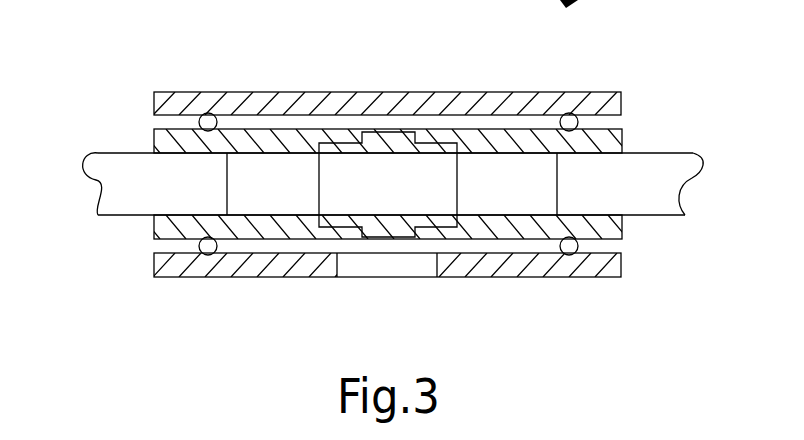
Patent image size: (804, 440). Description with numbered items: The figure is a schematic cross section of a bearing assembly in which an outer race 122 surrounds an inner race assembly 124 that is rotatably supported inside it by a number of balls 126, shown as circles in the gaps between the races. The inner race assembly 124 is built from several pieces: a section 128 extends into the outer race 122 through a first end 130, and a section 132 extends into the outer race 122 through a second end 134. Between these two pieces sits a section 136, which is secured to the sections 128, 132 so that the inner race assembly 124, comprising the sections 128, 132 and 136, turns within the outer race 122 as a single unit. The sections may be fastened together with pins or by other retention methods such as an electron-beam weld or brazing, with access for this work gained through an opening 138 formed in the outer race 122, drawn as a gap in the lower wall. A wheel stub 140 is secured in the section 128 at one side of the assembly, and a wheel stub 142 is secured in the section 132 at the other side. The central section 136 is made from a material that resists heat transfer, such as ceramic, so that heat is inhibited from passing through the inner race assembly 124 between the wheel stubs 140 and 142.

The outer race 122 is at (388, 97).
The inner race assembly 124 is at (270, 231).
The balls 126 is at (211, 120).
The section 128 is at (285, 143).
The first end 130 is at (153, 103).
The section 132 is at (483, 232).
The second end 134 is at (621, 104).
The section 136 is at (405, 140).
The opening 138 is at (338, 267).
The wheel stub 140 is at (138, 187).
The wheel stub 142 is at (658, 165).